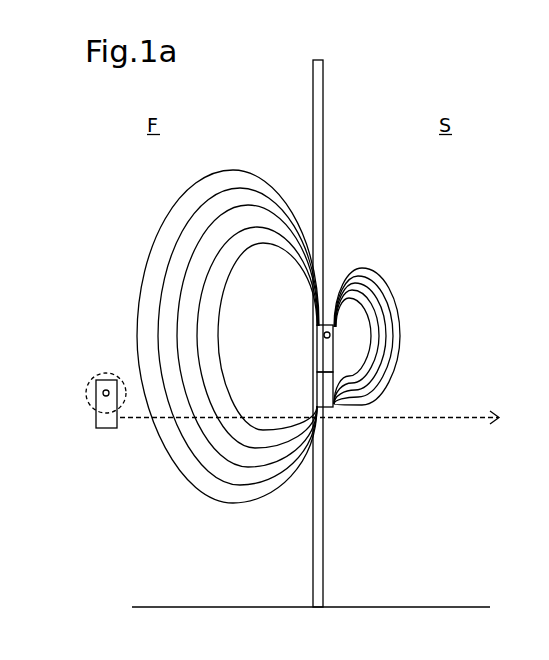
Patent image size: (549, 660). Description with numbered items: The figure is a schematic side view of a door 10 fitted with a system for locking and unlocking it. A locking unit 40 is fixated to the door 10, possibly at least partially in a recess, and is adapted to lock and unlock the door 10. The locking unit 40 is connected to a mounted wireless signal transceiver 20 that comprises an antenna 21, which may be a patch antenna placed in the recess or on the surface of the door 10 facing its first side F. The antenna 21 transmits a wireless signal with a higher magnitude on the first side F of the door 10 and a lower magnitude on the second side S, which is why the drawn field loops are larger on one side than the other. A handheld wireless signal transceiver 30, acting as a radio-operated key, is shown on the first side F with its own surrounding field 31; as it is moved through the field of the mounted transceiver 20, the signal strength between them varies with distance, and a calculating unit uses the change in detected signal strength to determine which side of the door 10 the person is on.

The door 10 is at (324, 73).
The mounted wireless signal transceiver 20 is at (325, 352).
The antenna 21 is at (330, 335).
The handheld wireless signal transceiver 30 is at (98, 420).
The sensor detection zone 31 is at (101, 390).
The locking unit 40 is at (328, 395).